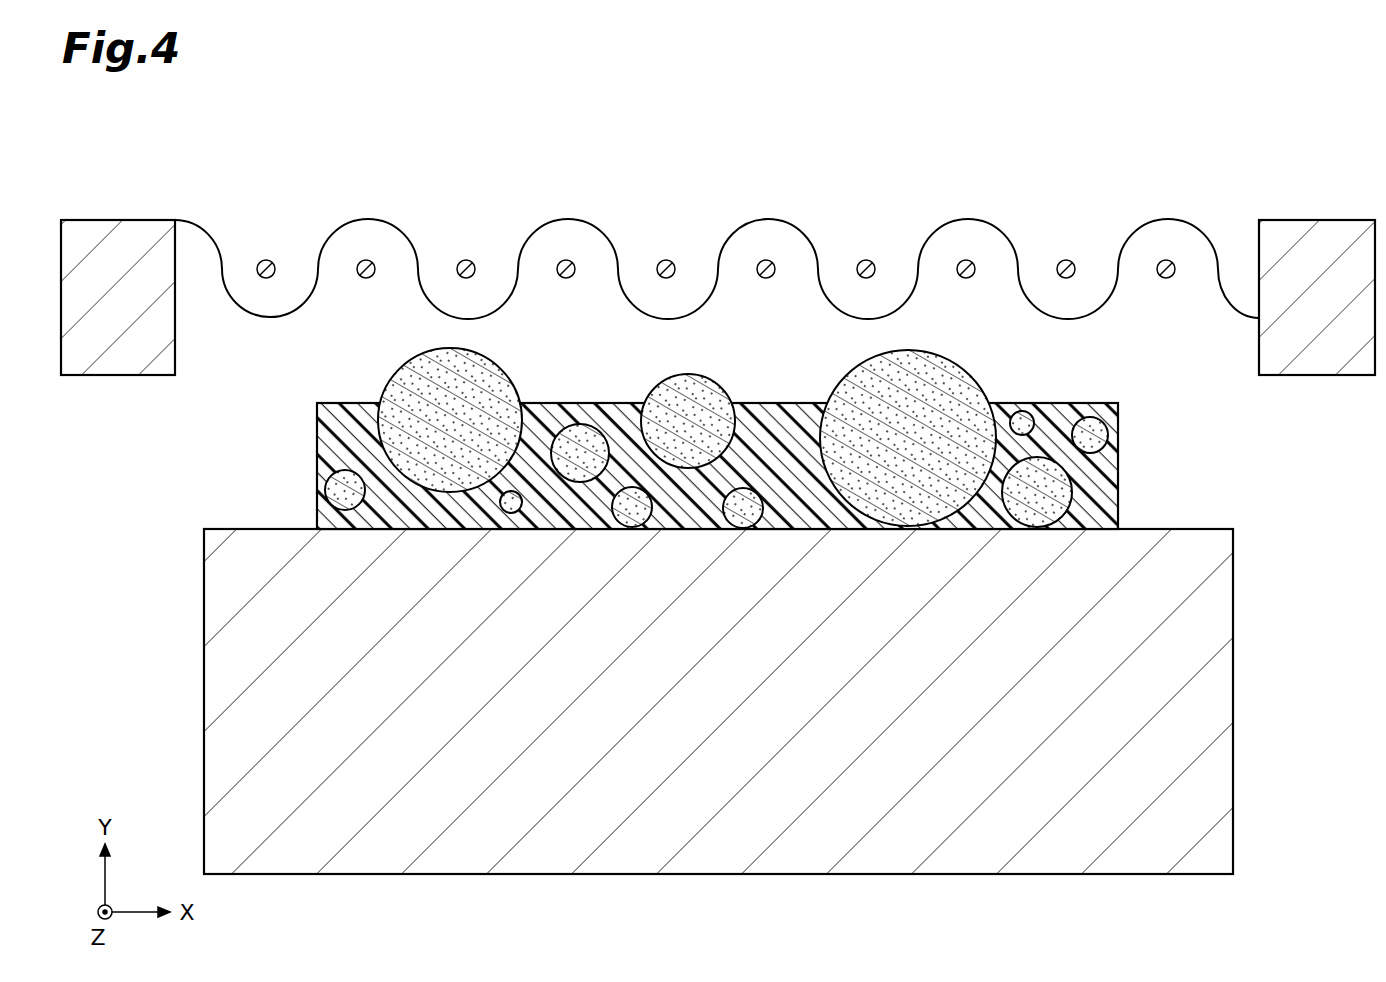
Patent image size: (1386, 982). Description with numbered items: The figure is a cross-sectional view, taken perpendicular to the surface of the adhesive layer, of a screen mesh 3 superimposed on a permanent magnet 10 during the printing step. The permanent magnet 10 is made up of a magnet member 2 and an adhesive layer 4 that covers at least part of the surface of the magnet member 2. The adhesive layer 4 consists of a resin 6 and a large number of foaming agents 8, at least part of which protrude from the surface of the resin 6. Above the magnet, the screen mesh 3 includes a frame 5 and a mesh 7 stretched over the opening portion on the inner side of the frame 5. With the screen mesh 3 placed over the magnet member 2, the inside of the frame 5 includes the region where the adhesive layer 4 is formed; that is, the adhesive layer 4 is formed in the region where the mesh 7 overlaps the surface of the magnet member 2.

The magnet member 2 is at (1233, 608).
The screen mesh 3 is at (1342, 128).
The adhesive layer 4 is at (1285, 402).
The frame 5 is at (140, 220).
The resin 6 is at (1095, 483).
The mesh 7 is at (766, 219).
The foaming agents 8 is at (975, 364).
The permanent magnet 10 is at (1326, 392).